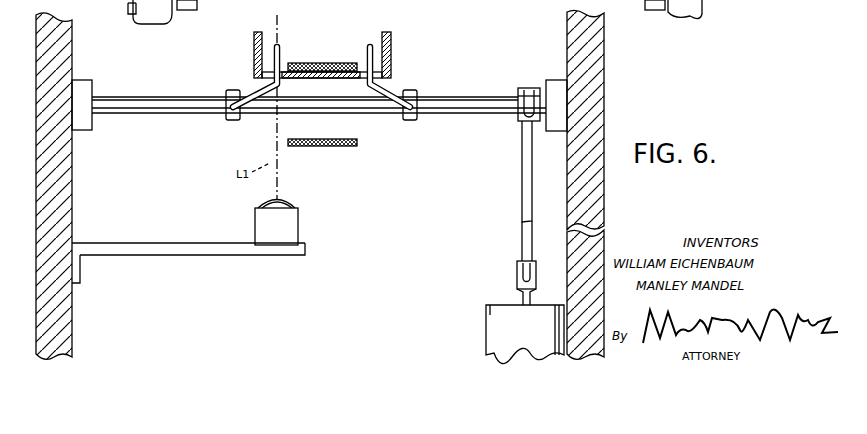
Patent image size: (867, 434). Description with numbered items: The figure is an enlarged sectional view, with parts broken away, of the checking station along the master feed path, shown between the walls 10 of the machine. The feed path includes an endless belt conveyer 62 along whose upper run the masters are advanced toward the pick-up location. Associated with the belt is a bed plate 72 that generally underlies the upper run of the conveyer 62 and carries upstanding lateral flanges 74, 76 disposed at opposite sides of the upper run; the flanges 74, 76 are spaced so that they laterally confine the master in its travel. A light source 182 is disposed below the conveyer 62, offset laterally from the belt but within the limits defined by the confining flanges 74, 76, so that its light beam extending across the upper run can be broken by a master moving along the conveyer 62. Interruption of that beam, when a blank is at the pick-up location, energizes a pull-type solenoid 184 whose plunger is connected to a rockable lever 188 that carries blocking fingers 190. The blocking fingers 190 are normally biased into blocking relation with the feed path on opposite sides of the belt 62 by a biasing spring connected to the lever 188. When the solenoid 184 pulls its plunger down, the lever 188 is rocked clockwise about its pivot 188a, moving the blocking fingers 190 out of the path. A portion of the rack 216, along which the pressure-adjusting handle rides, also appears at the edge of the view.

The housing wall 10 is at (55, 30).
The rack 216 is at (131, 15).
The upstanding lateral flange 74 is at (257, 30).
The upstanding lateral flange 76 is at (388, 30).
The bed plate 72 is at (330, 71).
The endless belt conveyer 62 is at (300, 62).
The blocking fingers 190 is at (272, 51).
The pivot 188a is at (188, 112).
The light source 182 is at (298, 228).
The rockable lever 188 is at (529, 88).
The pull-type solenoid 184 is at (495, 325).